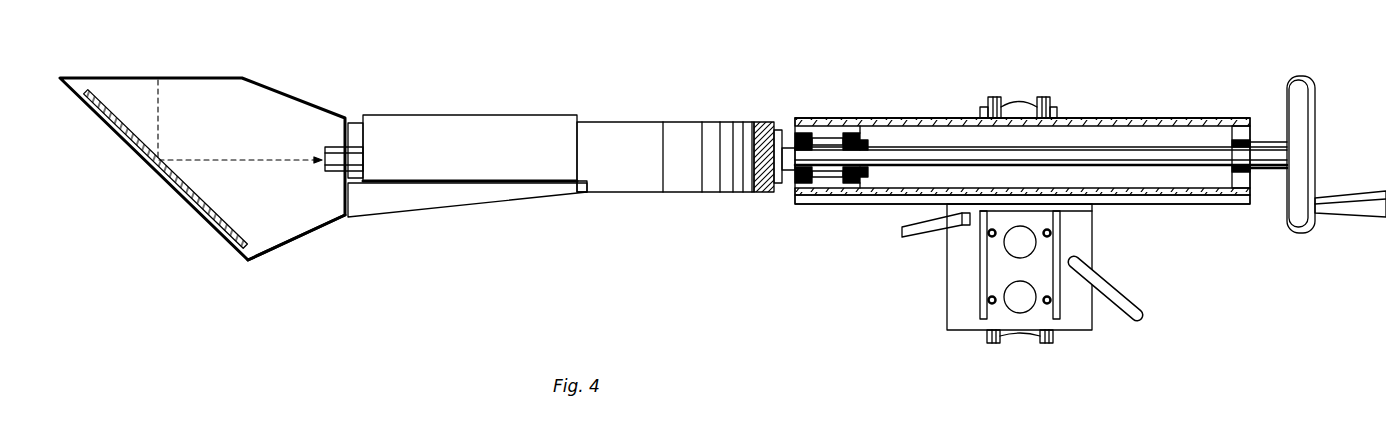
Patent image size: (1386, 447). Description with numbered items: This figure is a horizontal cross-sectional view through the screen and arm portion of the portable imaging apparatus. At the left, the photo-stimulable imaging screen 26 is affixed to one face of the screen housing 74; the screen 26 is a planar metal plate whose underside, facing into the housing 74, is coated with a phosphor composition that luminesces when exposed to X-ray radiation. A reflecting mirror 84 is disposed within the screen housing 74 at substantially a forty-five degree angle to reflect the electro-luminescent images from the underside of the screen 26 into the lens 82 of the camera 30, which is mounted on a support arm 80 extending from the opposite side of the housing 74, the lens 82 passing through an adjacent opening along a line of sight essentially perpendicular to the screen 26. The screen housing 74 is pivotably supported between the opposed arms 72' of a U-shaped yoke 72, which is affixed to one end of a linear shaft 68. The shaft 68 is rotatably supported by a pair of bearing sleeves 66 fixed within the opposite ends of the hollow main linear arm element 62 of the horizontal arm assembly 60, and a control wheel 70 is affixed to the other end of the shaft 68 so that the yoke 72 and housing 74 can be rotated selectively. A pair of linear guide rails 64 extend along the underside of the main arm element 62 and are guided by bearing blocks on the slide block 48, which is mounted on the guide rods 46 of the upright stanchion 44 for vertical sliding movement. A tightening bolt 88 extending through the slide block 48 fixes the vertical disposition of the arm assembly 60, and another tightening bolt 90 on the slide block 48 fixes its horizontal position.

The photo-stimulable imaging screen 26 is at (184, 77).
The reflecting mirror 84 is at (188, 193).
The screen housing 74 is at (270, 255).
The lens 82 is at (334, 172).
The camera 30 is at (490, 132).
The support arm 80 is at (428, 207).
The yoke arm 72' is at (665, 185).
The U-shaped yoke 72 is at (766, 129).
The linear guide rails 64 is at (872, 205).
The main linear arm element 62 is at (1178, 117).
The horizontal arm assembly 60 is at (1224, 205).
The linear shaft 68 is at (932, 160).
The bearing sleeves 66 is at (832, 137).
The guide rods 46 is at (1045, 97).
The upright stanchion 44 is at (1058, 112).
The control wheel 70 is at (1304, 108).
The slide block 48 is at (1075, 237).
The tightening bolt 88 is at (918, 238).
The tightening bolt 90 is at (1141, 310).